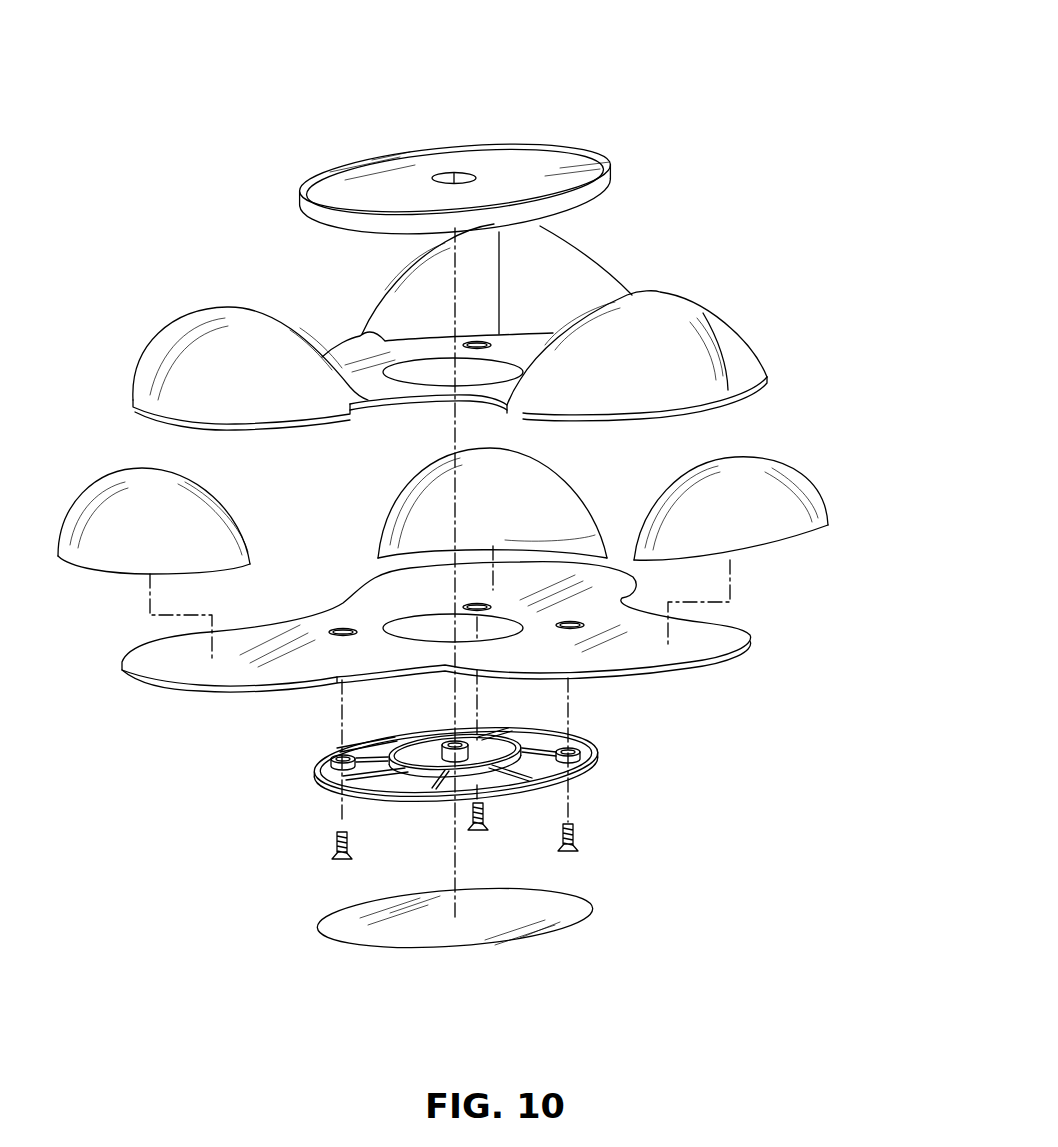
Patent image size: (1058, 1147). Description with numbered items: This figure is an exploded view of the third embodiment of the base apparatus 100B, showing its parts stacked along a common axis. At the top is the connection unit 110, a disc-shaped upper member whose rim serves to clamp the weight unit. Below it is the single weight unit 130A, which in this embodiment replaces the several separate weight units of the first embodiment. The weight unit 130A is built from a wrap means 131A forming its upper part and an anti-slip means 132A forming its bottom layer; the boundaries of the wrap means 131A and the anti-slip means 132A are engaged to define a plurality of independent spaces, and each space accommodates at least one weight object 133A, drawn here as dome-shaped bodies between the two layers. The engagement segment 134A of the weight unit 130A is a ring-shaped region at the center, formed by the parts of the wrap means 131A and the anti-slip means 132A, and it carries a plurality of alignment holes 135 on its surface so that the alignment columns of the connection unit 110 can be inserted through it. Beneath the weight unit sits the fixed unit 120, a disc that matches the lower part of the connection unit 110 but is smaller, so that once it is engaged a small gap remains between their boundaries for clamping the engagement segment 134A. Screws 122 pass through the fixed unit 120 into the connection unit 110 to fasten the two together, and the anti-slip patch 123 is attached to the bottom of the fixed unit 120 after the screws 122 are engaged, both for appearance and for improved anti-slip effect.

The base apparatus 100B is at (606, 120).
The connection unit 110 is at (608, 168).
The weight unit 130A is at (833, 241).
The wrap means 131A is at (700, 322).
The weight object 133A is at (730, 460).
The anti-slip means 132A is at (717, 633).
The engagement segment 134A is at (560, 348).
The alignment hole 135 is at (543, 350).
The fixed unit 120 is at (602, 753).
The screw 122 is at (578, 852).
The anti-slip patch 123 is at (565, 915).